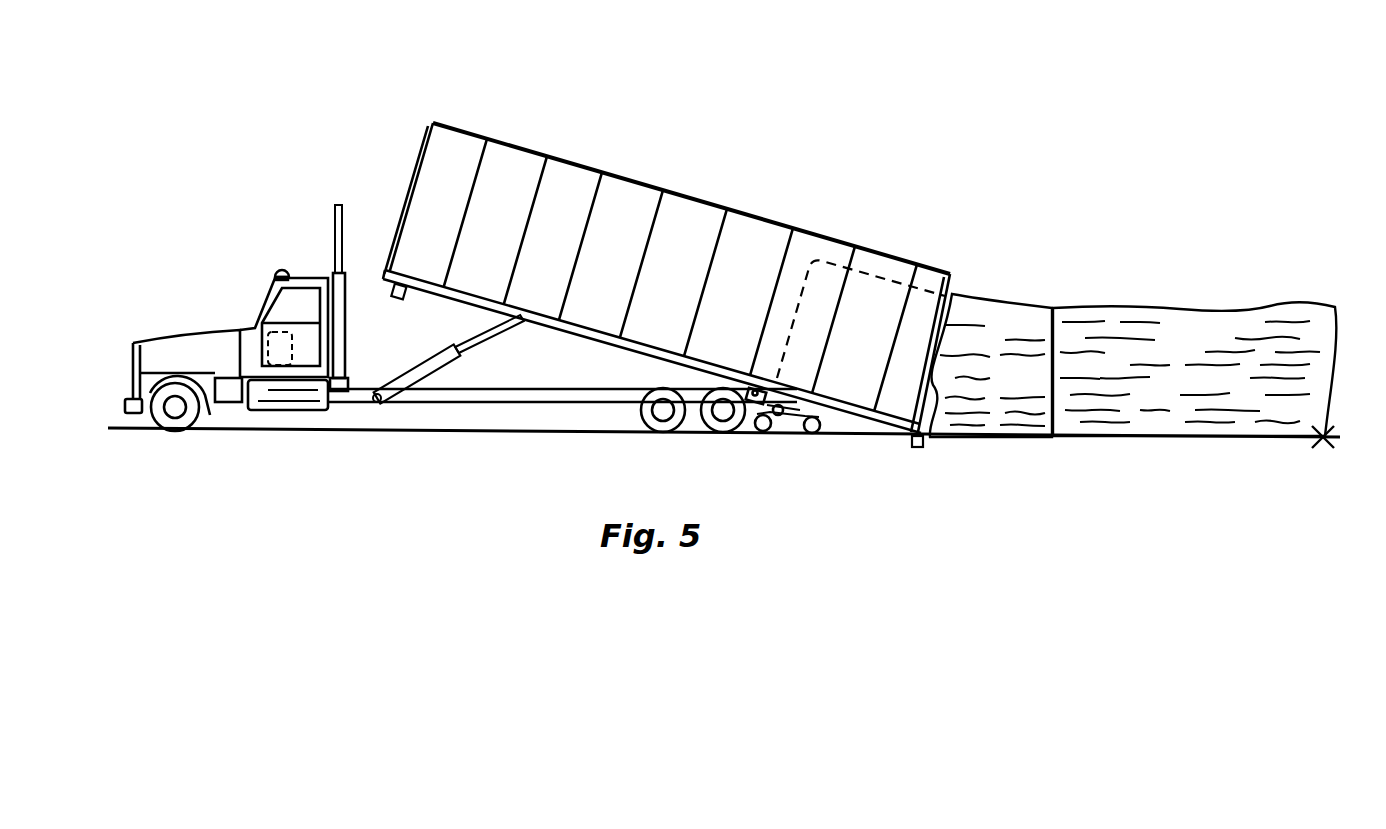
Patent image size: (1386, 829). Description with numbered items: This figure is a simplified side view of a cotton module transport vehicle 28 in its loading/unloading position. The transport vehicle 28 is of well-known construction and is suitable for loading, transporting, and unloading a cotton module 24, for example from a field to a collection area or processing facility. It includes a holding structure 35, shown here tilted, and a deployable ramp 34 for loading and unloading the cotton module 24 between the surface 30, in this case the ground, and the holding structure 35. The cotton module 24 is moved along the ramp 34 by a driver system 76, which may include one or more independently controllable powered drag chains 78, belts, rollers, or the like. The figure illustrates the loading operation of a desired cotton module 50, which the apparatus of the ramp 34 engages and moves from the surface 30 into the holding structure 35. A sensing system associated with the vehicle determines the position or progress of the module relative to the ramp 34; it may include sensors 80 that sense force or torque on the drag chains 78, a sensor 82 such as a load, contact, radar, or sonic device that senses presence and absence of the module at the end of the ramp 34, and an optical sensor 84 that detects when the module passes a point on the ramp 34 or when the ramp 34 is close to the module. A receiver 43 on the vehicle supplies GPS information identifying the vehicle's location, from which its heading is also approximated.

The cotton module transport vehicle 28 is at (583, 100).
The holding structure 35 is at (649, 182).
The powered drag chains 78 is at (652, 342).
The driver system 76 is at (394, 312).
The sensors 80 is at (394, 299).
The sensor 82 is at (970, 461).
The optical sensor 84 is at (917, 448).
The receiver 43 is at (282, 265).
The desired cotton module 50 is at (982, 303).
The cotton module 24 is at (1110, 305).
The surface 30 is at (1341, 430).
The deployable ramp 34 is at (855, 437).